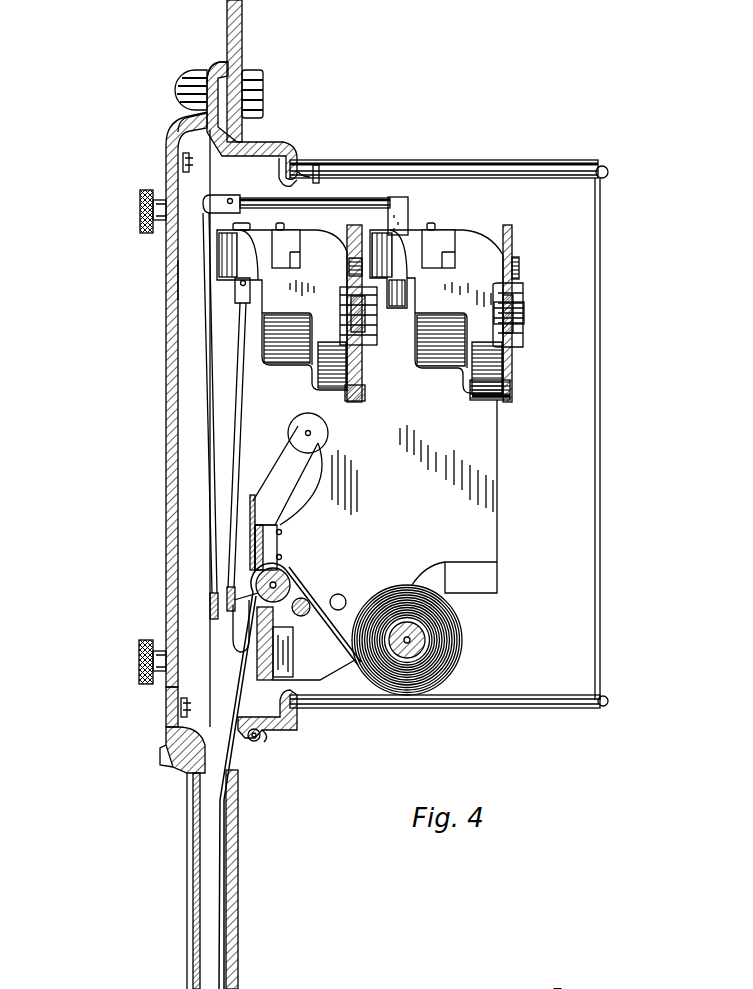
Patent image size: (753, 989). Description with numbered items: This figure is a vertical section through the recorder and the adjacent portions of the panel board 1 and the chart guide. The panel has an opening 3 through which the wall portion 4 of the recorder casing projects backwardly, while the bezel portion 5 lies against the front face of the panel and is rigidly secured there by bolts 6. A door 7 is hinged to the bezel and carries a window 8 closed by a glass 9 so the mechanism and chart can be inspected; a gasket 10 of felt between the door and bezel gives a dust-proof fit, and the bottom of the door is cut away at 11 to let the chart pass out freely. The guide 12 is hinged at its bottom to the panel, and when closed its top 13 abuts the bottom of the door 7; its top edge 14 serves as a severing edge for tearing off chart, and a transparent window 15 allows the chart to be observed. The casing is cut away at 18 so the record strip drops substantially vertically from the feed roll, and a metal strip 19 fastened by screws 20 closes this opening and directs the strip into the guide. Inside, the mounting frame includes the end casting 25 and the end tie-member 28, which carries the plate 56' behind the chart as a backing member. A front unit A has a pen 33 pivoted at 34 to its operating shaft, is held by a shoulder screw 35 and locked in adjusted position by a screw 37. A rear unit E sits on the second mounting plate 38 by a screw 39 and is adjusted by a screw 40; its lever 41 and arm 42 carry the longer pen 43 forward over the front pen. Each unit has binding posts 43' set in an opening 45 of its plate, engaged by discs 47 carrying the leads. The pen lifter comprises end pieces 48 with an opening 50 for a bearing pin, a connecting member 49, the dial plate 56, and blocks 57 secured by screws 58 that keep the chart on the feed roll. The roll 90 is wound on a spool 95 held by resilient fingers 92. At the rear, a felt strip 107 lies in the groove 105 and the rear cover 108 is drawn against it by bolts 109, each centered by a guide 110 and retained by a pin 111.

The panel board 1 is at (240, 876).
The opening 3 is at (246, 148).
The wall portion 4 is at (292, 150).
The bezel portion 5 is at (214, 60).
The bolts 6 is at (185, 90).
The door 7 is at (168, 150).
The window 8 is at (168, 184).
The glass 9 is at (168, 278).
The lip 10 is at (192, 118).
The cut-away bottom portion of door 11 is at (185, 732).
The guide 12 is at (187, 828).
The top of guide 13 is at (190, 772).
The top edge of guide 14 is at (168, 752).
The transparent window 15 is at (195, 872).
The cut-away portion of casing 18 is at (255, 741).
The metal strip 19 is at (240, 782).
The screws 20 is at (267, 738).
The end casting 25 is at (497, 447).
The end tie-member 28 is at (258, 675).
The pen 33 is at (246, 405).
The pivot 34 is at (231, 195).
The shoulder screw 35 is at (350, 258).
The screw 37 is at (365, 393).
The second mounting plate 38 is at (513, 242).
The screw 39 is at (520, 265).
The screw 40 is at (512, 388).
The lever 41 is at (408, 208).
The arm 42 is at (366, 198).
The pen 43 is at (174, 416).
The binding posts 43' is at (533, 318).
The opening 45 is at (362, 348).
The discs 47 is at (376, 326).
The end pieces 48 is at (293, 458).
The connecting member 49 is at (277, 525).
The opening 50 is at (312, 433).
The dial plate 56 is at (194, 532).
The plate 56' is at (229, 637).
The blocks 57 is at (281, 545).
The screws 58 is at (282, 558).
The roll 90 is at (462, 645).
The resilient fingers 92 is at (320, 668).
The spool 95 is at (425, 632).
The groove 105 is at (298, 726).
The felt strip 107 is at (330, 711).
The rear cover 108 is at (601, 455).
The bolts 109 is at (452, 164).
The guide 110 is at (319, 165).
The pin 111 is at (312, 177).